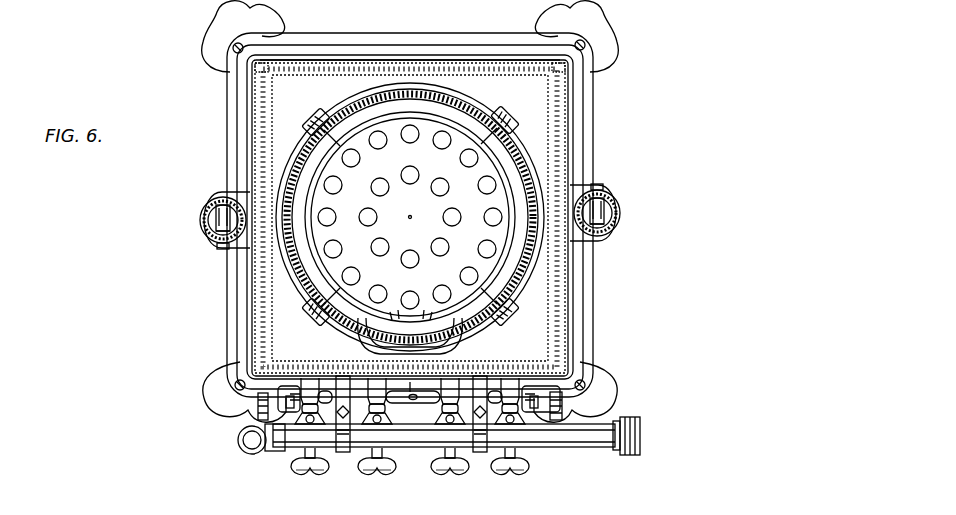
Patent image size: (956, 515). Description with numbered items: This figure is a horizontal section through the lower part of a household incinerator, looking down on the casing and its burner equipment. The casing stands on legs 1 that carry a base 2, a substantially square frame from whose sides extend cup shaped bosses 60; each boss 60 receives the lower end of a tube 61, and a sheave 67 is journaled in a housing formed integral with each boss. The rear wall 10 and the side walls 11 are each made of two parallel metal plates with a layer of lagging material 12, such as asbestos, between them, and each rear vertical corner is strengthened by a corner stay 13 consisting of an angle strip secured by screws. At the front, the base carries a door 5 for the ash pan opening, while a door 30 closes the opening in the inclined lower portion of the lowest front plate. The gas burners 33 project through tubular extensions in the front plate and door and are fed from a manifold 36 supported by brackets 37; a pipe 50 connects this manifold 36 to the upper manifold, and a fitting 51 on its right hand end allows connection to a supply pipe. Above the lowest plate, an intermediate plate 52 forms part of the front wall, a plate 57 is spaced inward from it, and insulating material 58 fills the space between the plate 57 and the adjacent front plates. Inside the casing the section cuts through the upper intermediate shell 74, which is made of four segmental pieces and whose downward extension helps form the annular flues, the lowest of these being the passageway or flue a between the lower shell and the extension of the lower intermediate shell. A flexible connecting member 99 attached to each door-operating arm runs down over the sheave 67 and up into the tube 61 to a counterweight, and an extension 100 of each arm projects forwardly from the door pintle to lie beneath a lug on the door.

The legs 1 is at (214, 50).
The base 2 is at (590, 302).
The door 5 is at (258, 408).
The rear wall 10 is at (404, 62).
The side walls 11 is at (258, 147).
The lagging material 12 is at (322, 70).
The corner stay 13 is at (257, 85).
The door 30 is at (410, 392).
The gas burners 33 is at (298, 430).
The manifold 36 is at (577, 437).
The brackets 37 is at (347, 447).
The pipe 50 is at (247, 448).
The fitting 51 is at (622, 430).
The intermediate plate 52 is at (317, 372).
The plate 57 is at (530, 360).
The insulating material 58 is at (463, 358).
The cup shaped boss 60 is at (210, 195).
The tube 61 is at (215, 220).
The sheave 67 is at (216, 224).
The upper intermediate shell 74 is at (336, 112).
The flexible connecting member 99 is at (220, 248).
The extension 100 is at (330, 20).
The passageway or flue a is at (410, 332).